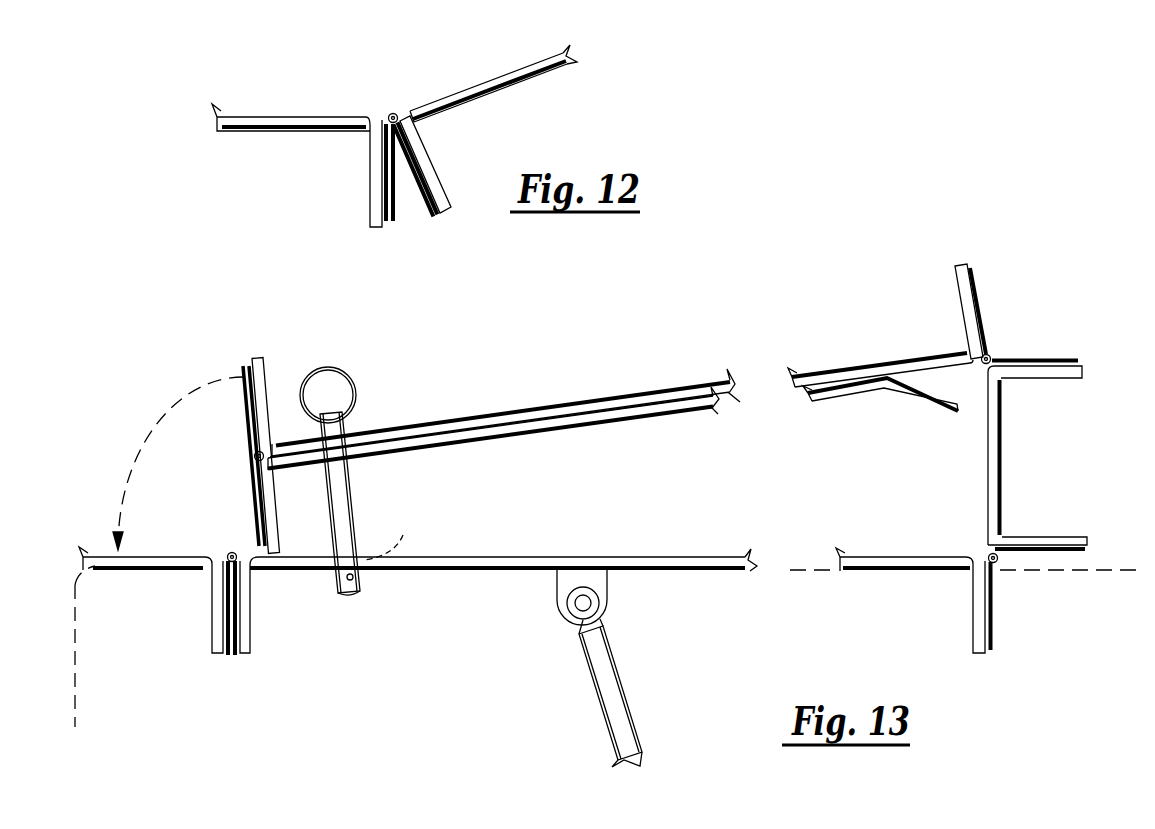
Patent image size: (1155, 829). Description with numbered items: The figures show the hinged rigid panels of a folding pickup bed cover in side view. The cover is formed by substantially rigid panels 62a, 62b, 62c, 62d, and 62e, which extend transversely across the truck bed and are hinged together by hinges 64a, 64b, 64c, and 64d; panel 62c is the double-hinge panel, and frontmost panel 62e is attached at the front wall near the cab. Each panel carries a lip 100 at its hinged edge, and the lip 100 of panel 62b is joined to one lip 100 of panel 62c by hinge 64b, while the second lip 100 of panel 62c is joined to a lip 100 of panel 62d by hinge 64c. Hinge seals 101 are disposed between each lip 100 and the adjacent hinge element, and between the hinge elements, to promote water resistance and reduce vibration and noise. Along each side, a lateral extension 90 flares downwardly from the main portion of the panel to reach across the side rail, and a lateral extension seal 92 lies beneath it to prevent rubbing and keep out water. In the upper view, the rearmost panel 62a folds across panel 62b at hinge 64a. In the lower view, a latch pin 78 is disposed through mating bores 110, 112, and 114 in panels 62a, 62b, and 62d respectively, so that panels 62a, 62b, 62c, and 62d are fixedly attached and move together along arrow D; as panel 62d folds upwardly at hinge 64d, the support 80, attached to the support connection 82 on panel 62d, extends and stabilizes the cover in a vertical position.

In FIG. 12, the rigid panel 62a is at (492, 84).
In FIG. 13, the rigid panel 62a is at (560, 430).
In FIG. 12, the rigid panel 62b is at (288, 116).
In FIG. 13, the rigid panel 62b is at (547, 418).
In FIG. 13, the rigid panel 62c is at (986, 440).
In FIG. 13, the rigid panel 62d is at (486, 556).
In FIG. 13, the rigid panel 62e is at (134, 556).
In FIG. 12, the hinge 64a is at (390, 113).
In FIG. 13, the hinge 64a is at (254, 455).
In FIG. 13, the hinge 64b is at (990, 355).
In FIG. 13, the hinge 64c is at (989, 554).
In FIG. 13, the hinge 64d is at (232, 552).
In FIG. 13, the latch pin 78 is at (325, 500).
In FIG. 13, the support 80 is at (630, 700).
In FIG. 13, the support connection 82 is at (609, 586).
In FIG. 12, the lateral extension 90 is at (245, 124).
In FIG. 13, the lateral extension 90 is at (408, 570).
In FIG. 12, the lateral extension seal 92 is at (394, 108).
In FIG. 13, the lateral extension seal 92 is at (533, 467).
In FIG. 12, the lip 100 is at (370, 196).
In FIG. 13, the lip 100 is at (212, 613).
In FIG. 12, the hinge seal 101 is at (393, 214).
In FIG. 13, the hinge seal 101 is at (240, 372).
In FIG. 13, the mating bore 110 is at (376, 456).
In FIG. 13, the mating bore 112 is at (378, 424).
In FIG. 13, the mating bore 114 is at (378, 553).
In FIG. 13, the arrow D is at (148, 423).